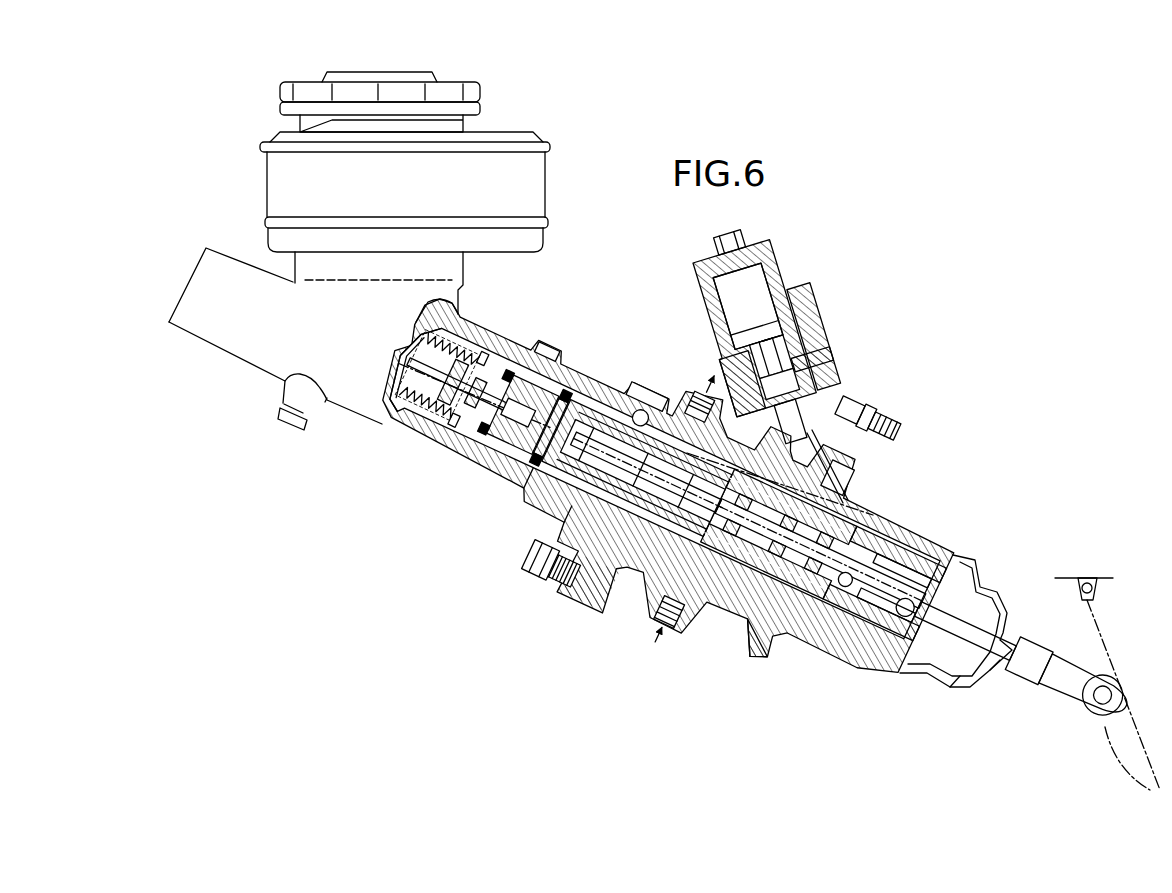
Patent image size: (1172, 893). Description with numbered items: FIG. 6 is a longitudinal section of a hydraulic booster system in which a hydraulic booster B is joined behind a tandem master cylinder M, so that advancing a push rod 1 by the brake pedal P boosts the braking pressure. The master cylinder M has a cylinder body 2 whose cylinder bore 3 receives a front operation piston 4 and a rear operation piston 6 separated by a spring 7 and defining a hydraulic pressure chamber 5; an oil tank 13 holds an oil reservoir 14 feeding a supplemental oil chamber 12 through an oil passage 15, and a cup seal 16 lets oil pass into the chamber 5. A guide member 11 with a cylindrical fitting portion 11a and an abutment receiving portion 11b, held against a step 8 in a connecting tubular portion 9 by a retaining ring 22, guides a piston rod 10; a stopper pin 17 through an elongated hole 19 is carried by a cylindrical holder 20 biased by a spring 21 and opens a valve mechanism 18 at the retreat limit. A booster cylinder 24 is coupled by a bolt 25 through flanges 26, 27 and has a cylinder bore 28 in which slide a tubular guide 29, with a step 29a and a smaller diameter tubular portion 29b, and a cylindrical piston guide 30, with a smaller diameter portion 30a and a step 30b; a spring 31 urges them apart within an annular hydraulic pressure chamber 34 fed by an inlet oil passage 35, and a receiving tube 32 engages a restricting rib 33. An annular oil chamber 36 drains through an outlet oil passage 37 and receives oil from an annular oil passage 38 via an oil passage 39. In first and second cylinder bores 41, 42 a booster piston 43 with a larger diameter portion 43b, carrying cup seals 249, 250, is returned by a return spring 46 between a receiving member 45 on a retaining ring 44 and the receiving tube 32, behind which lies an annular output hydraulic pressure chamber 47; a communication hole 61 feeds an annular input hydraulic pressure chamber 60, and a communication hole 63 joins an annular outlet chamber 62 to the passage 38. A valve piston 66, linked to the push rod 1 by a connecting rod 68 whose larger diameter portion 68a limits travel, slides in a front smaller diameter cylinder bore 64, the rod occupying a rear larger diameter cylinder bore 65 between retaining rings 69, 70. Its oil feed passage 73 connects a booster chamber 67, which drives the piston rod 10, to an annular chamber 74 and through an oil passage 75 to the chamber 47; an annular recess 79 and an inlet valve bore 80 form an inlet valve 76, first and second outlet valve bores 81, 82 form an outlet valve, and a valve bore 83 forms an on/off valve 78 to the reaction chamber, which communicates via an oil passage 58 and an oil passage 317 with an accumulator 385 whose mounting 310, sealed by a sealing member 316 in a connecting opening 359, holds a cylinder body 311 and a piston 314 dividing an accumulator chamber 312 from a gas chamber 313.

The push rod 1 is at (1021, 657).
The cylinder body 2 is at (357, 405).
The cylinder bore 3 is at (651, 500).
The front operation piston 4 is at (409, 365).
The hydraulic pressure chamber 5 is at (437, 375).
The rear operation piston 6 is at (468, 389).
The spring 7 is at (451, 349).
The step 8 is at (551, 428).
The connecting tubular portion 9 is at (548, 495).
The piston rod 10 is at (637, 468).
The guide member 11 is at (546, 352).
The cylindrical fitting portion 11a is at (557, 392).
The abutment receiving portion 11b is at (596, 345).
The supplemental oil chamber 12 is at (550, 427).
The oil tank 13 is at (460, 293).
The oil reservoir 14 is at (432, 311).
The oil passage 15 is at (489, 347).
The cup seal 16 is at (427, 402).
The stopper pin 17 is at (523, 414).
The valve mechanism 18 is at (475, 393).
The elongated hole 19 is at (496, 402).
The cylindrical holder 20 is at (452, 382).
The spring 21 is at (475, 393).
The retaining ring 22 is at (604, 402).
The booster cylinder 24 is at (850, 511).
The bolt 25 is at (541, 560).
The flange 26 is at (564, 570).
The flange 27 is at (591, 582).
The cylinder bore 28 is at (719, 600).
The tubular guide 29 is at (642, 407).
The step 29a is at (593, 545).
The smaller diameter tubular portion 29b is at (600, 525).
The cylindrical piston guide 30 is at (812, 632).
The smaller diameter portion 30a is at (648, 473).
The step 30b is at (795, 505).
The spring 31 is at (742, 603).
The receiving tube 32 is at (905, 546).
The restricting rib 33 is at (952, 564).
The annular hydraulic pressure chamber 34 is at (780, 468).
The inlet oil passage 35 is at (664, 621).
The annular oil chamber 36 is at (605, 570).
The outlet oil passage 37 is at (704, 396).
The annular oil passage 38 is at (630, 560).
The oil passage 39 is at (640, 528).
The first cylinder bore 41 is at (698, 443).
The second cylinder bore 42 is at (866, 531).
The booster piston 43 is at (866, 640).
The larger diameter portion 43b is at (830, 640).
The retaining ring 44 is at (993, 612).
The receiving member 45 is at (963, 672).
The return spring 46 is at (930, 675).
The annular output hydraulic pressure chamber 47 is at (880, 538).
The oil passage 58 is at (838, 478).
The annular input hydraulic pressure chamber 60 is at (757, 570).
The communication hole 61 is at (713, 580).
The annular outlet chamber 62 is at (722, 438).
The communication hole 63 is at (779, 534).
The front smaller diameter cylinder bore 64 is at (783, 570).
The rear larger diameter cylinder bore 65 is at (885, 583).
The valve piston 66 is at (819, 553).
The booster chamber 67 is at (672, 505).
The connecting rod 68 is at (905, 607).
The larger diameter portion 68a is at (946, 658).
The retaining ring 69 is at (894, 588).
The retaining ring 70 is at (675, 505).
The oil feed passage 73 is at (738, 515).
The annular chamber 74 is at (856, 621).
The oil passage 75 is at (845, 579).
The inlet valve 76 is at (768, 603).
The on/off valve 78 is at (818, 616).
The annular recess 79 is at (790, 546).
The inlet valve bore 80 is at (820, 554).
The first outlet valve bore 81 is at (708, 535).
The second outlet valve bore 82 is at (783, 536).
The valve bore 83 is at (815, 554).
The cup seal 249 is at (756, 641).
The cup seal 250 is at (845, 650).
The mounting 310 is at (814, 336).
The cylinder body 311 is at (730, 242).
The accumulator chamber 312 is at (812, 359).
The gas chamber 313 is at (748, 306).
The piston 314 is at (773, 364).
The sealing member 316 is at (845, 412).
The oil passage 317 is at (760, 378).
The connecting opening 359 is at (790, 421).
The accumulator 385 is at (769, 335).
The master cylinder M is at (527, 342).
The hydraulic booster B is at (878, 490).
The brake pedal P is at (1118, 748).